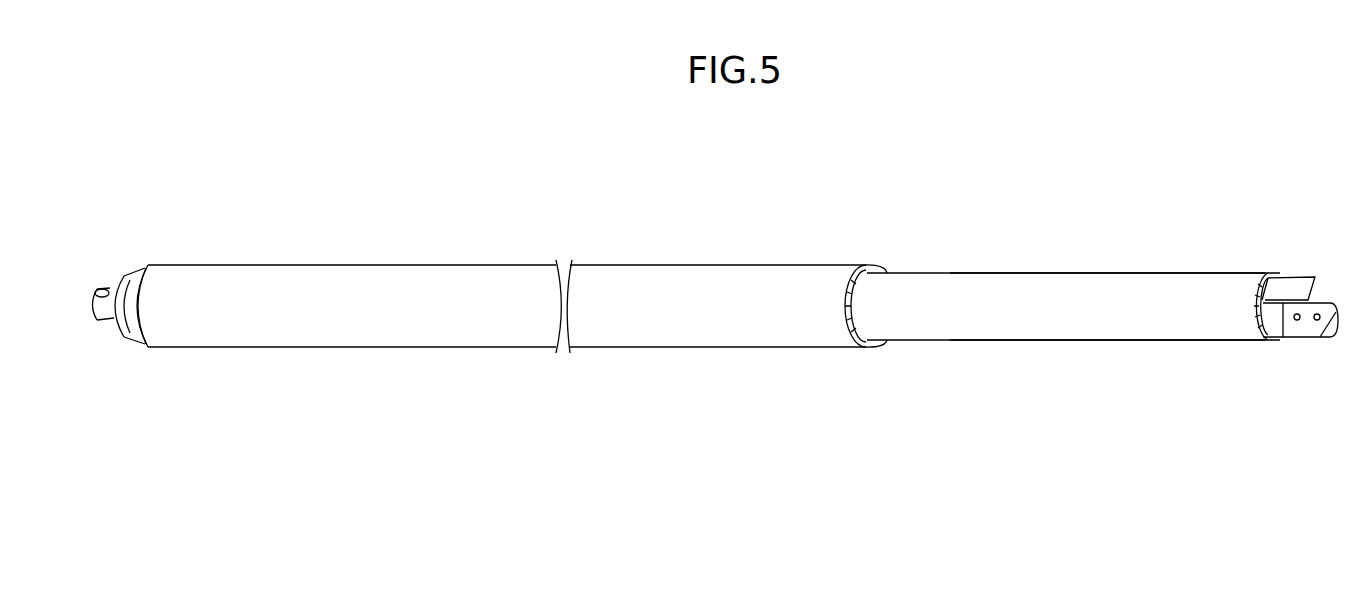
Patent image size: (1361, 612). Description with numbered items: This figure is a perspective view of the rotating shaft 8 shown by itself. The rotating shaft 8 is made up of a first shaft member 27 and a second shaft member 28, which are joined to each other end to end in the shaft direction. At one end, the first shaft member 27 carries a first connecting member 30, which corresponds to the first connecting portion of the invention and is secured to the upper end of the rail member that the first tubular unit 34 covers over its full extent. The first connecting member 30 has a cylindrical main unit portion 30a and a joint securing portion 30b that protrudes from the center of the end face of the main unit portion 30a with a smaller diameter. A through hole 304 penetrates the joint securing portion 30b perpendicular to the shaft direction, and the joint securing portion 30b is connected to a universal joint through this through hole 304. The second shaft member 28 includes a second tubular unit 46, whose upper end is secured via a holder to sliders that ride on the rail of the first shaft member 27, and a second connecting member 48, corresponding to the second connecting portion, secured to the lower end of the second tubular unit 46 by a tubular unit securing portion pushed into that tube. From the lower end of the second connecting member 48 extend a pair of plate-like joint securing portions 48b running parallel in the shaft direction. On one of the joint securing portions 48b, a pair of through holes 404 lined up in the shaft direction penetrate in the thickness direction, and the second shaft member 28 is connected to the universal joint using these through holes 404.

The rotating shaft 8 is at (938, 193).
The first shaft member 27 is at (770, 262).
The second shaft member 28 is at (968, 270).
The first connecting member 30 is at (121, 302).
The main unit portion 30a is at (125, 327).
The joint securing portion 30b is at (89, 312).
The through hole 304 is at (100, 289).
The first tubular unit 34 is at (602, 268).
The second tubular unit 46 is at (1059, 337).
The second connecting member 48 is at (1277, 262).
The joint securing portions 48b is at (1300, 311).
The through holes 404 is at (1306, 334).